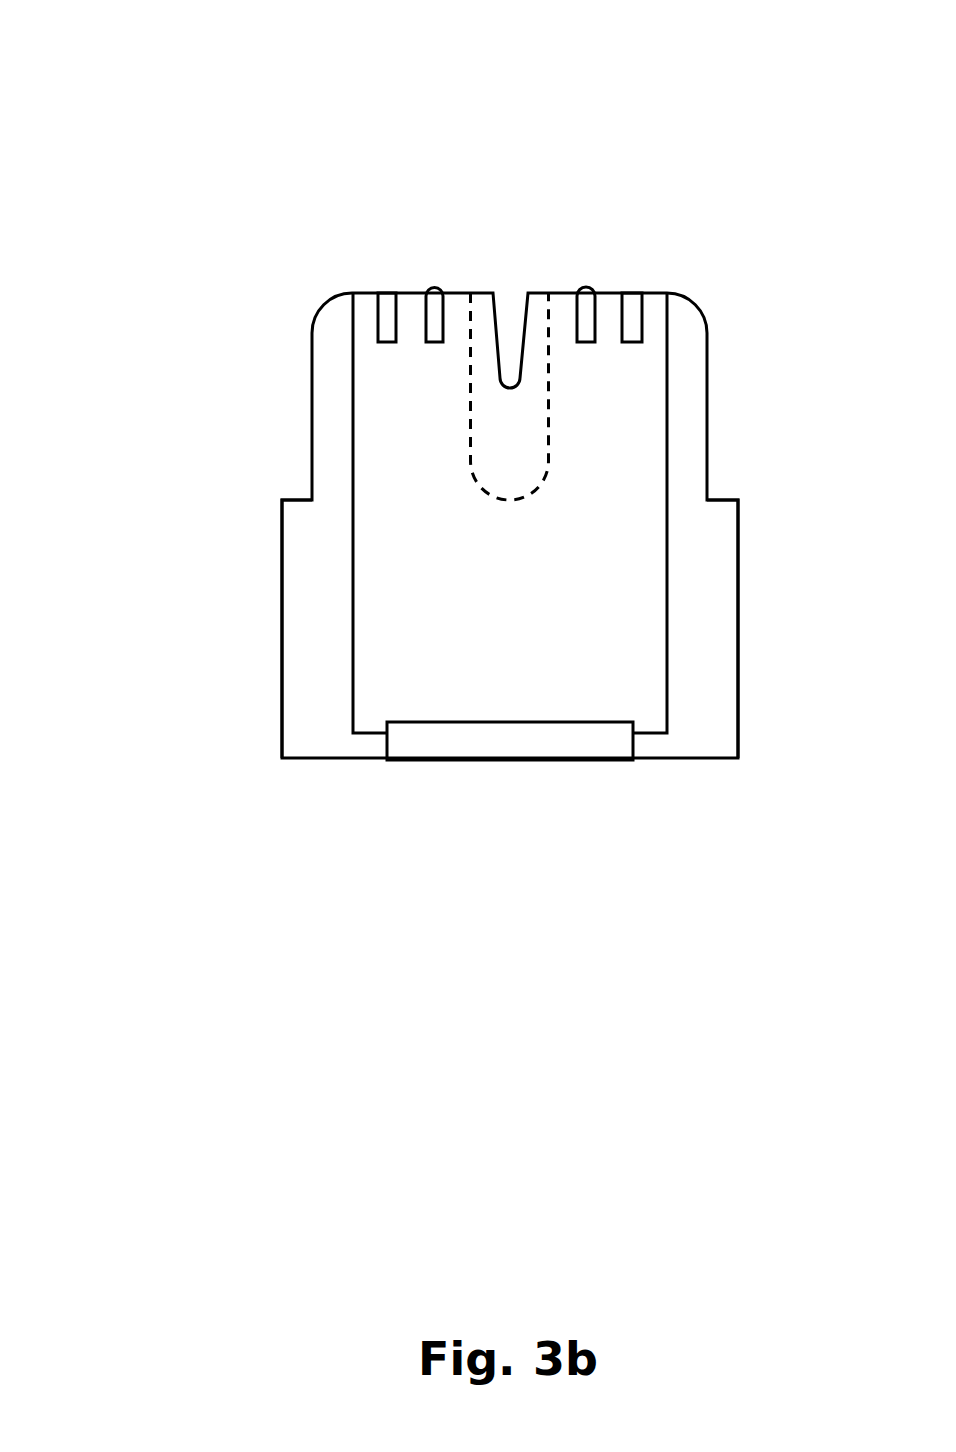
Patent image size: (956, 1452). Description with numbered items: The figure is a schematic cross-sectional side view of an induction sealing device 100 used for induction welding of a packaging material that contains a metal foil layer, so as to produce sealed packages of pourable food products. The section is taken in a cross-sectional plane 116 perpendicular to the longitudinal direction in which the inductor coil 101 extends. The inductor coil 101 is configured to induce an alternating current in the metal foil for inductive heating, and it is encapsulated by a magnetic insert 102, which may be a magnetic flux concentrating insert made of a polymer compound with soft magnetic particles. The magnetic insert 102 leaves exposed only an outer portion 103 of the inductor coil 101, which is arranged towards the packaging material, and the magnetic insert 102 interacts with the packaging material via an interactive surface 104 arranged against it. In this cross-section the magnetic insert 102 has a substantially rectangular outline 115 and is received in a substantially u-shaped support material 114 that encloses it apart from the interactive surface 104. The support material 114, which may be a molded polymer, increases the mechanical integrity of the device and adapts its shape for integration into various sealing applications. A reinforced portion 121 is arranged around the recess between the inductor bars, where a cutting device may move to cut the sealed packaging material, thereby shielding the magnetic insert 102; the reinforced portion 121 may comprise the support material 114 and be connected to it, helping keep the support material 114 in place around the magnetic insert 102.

The induction sealing device 100 is at (180, 77).
The inductor coil 101 is at (587, 317).
The magnetic insert 102 is at (622, 450).
The outer portion 103 is at (586, 291).
The interactive surface 104 is at (410, 291).
The support material 114 is at (325, 535).
The rectangular outline 115 is at (667, 657).
The cross-sectional plane 116 is at (243, 733).
The reinforced portion 121 is at (492, 432).